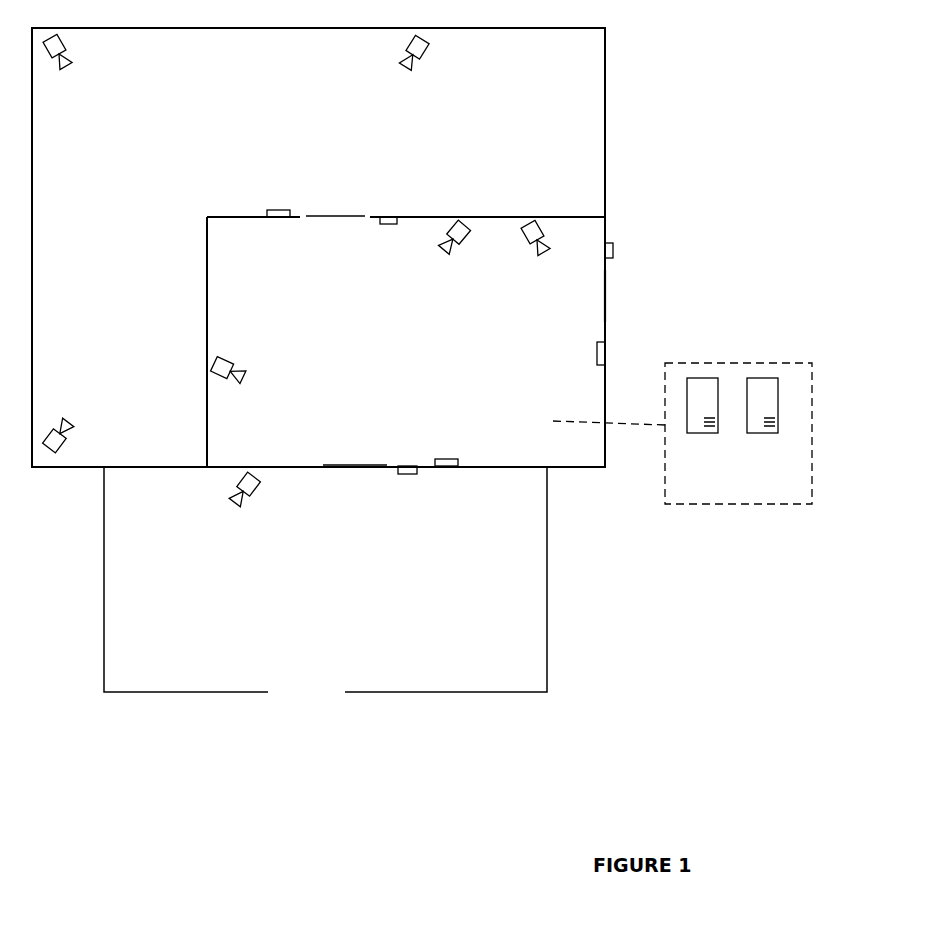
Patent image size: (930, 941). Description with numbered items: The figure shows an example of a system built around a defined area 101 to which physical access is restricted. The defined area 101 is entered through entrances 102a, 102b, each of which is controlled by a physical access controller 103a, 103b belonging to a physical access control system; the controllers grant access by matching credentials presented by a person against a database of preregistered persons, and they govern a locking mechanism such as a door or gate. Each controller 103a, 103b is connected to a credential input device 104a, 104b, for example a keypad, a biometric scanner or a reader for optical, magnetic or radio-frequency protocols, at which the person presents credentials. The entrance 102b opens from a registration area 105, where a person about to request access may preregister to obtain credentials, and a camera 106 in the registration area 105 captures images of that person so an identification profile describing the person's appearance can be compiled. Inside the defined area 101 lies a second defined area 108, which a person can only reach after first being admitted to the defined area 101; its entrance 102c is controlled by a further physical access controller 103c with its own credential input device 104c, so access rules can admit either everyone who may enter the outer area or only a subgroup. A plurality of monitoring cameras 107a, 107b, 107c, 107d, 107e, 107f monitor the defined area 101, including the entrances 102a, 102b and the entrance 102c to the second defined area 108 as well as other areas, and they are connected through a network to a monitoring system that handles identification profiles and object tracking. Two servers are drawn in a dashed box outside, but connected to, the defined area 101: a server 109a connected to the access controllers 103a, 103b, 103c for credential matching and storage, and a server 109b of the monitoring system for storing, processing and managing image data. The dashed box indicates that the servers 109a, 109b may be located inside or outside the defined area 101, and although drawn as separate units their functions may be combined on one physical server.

The defined area 101 is at (614, 59).
The entrance 102a is at (634, 296).
The entrance 102b is at (355, 481).
The entrance 102c is at (335, 229).
The physical access controller 103a is at (574, 354).
The physical access controller 103b is at (451, 451).
The physical access controller 103c is at (283, 202).
The credential input device 104a is at (635, 240).
The credential input device 104b is at (428, 482).
The credential input device 104c is at (401, 232).
The registration area 105 is at (530, 608).
The camera 106 is at (259, 492).
The monitoring camera 107a is at (239, 358).
The monitoring camera 107b is at (471, 243).
The monitoring camera 107c is at (559, 238).
The monitoring camera 107d is at (442, 53).
The monitoring camera 107e is at (85, 52).
The monitoring camera 107f is at (77, 439).
The second defined area 108 is at (318, 247).
The server 109a is at (707, 421).
The server 109b is at (767, 421).